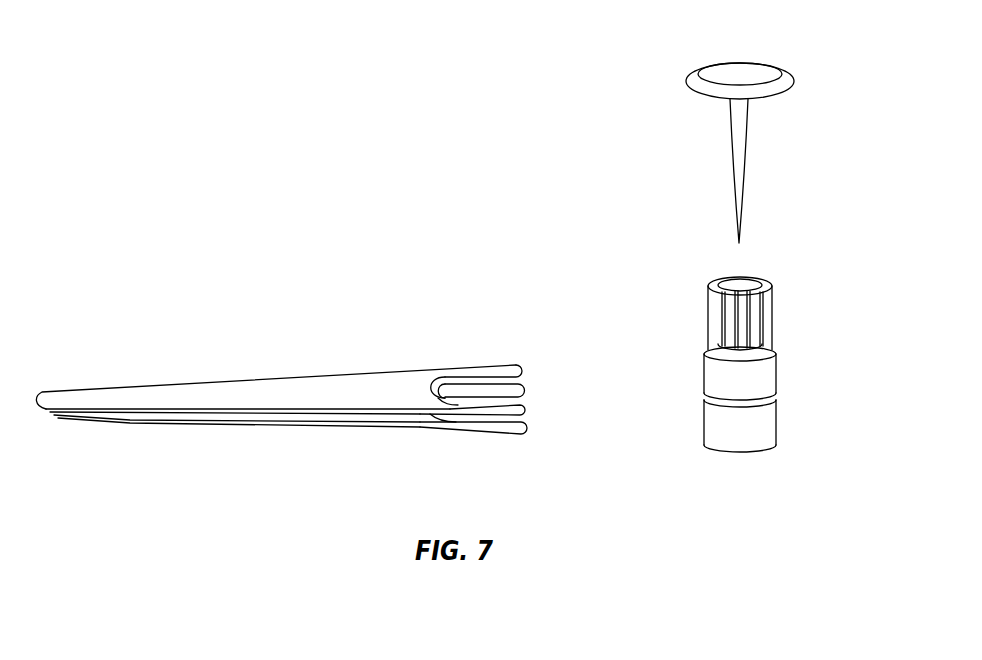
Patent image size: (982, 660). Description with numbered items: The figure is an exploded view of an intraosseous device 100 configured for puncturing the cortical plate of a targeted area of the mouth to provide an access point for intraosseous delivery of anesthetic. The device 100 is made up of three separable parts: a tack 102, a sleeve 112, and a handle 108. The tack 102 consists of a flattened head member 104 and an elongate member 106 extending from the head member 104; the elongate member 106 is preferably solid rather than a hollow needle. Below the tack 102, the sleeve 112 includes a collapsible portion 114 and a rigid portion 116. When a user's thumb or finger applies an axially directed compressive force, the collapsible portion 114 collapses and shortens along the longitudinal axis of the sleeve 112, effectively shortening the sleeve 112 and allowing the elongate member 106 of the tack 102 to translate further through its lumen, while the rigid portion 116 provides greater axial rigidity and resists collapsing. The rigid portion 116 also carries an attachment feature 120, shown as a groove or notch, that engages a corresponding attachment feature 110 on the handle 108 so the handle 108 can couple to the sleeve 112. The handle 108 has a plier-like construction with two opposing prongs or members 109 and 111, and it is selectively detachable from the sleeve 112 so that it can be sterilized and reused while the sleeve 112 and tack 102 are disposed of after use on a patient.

The intraosseous device 100 is at (204, 122).
The tack 102 is at (680, 72).
The head member 104 is at (786, 80).
The elongate member 106 is at (745, 173).
The handle 108 is at (280, 360).
The prong 109 is at (367, 376).
The attachment feature 110 is at (510, 368).
The prong 111 is at (400, 428).
The sleeve 112 is at (696, 306).
The collapsible portion 114 is at (773, 322).
The rigid portion 116 is at (775, 425).
The attachment feature 120 is at (775, 392).